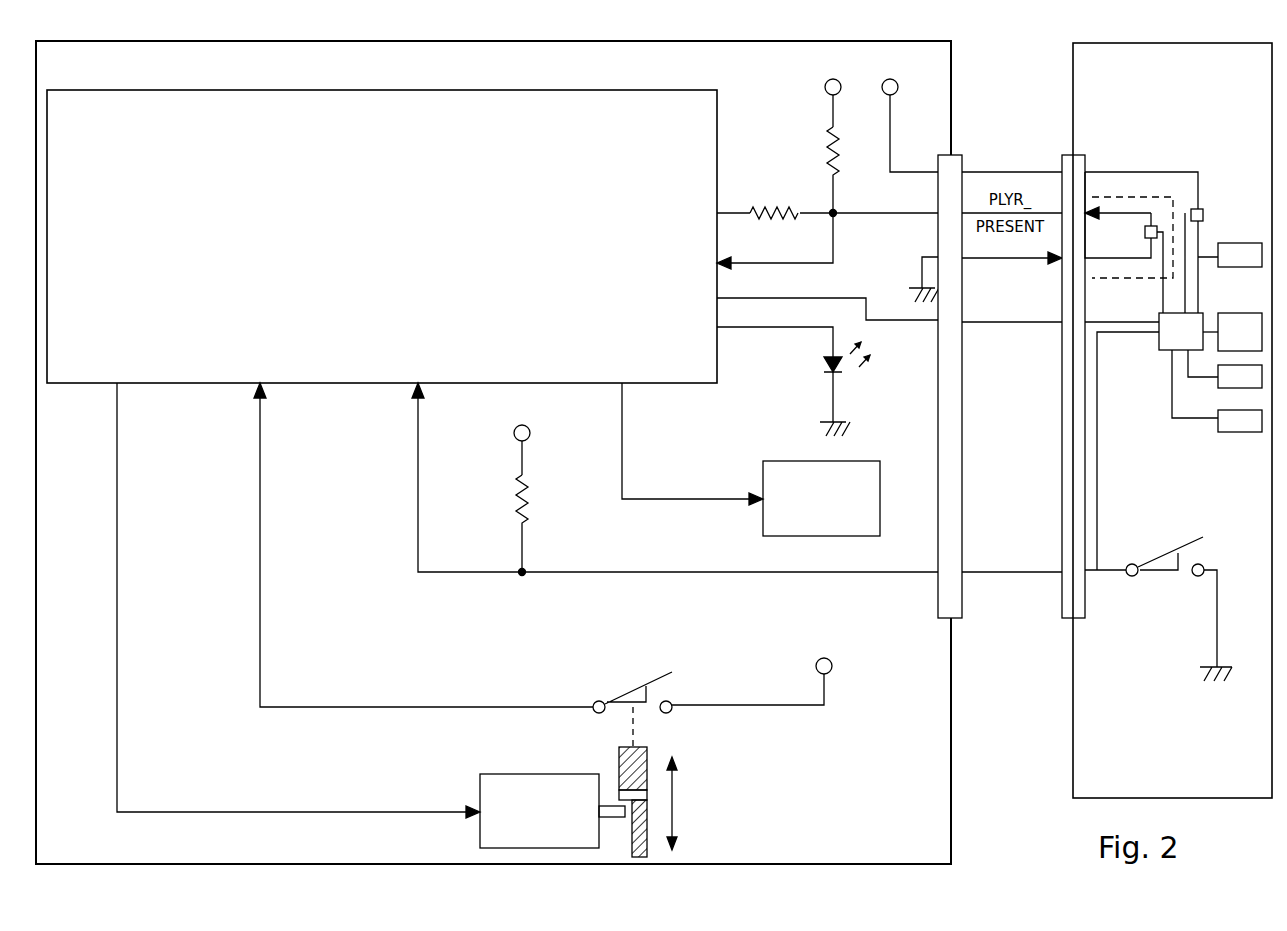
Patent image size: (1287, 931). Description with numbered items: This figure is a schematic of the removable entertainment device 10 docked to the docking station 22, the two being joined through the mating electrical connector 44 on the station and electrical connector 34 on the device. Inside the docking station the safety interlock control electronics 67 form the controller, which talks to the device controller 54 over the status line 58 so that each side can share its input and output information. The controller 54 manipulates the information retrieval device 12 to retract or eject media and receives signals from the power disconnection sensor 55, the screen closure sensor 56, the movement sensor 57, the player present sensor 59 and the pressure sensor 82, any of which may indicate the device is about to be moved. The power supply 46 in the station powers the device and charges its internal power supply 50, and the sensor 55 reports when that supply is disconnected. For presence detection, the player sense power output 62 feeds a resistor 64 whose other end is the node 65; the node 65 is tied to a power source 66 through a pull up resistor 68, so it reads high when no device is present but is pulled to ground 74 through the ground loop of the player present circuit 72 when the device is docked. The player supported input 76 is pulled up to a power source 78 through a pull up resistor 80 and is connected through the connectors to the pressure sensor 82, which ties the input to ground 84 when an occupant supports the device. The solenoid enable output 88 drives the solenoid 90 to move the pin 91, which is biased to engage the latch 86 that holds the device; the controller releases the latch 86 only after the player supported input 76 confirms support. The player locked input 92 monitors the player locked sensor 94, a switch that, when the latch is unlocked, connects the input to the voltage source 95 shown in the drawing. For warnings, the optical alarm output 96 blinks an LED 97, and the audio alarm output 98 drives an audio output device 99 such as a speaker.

The removable entertainment device 10 is at (1073, 78).
The information retrieval device 12 is at (1250, 313).
The docking station 22 is at (953, 68).
The electrical connector 34 is at (1067, 155).
The electrical connector 44 is at (957, 155).
The power supply 46 is at (892, 78).
The internal power supply 50 is at (1226, 267).
The controller 54 is at (1160, 350).
The power disconnection sensor 55 is at (1204, 216).
The screen closure sensor 56 is at (1218, 386).
The movement sensor 57 is at (1218, 430).
The status line 58 is at (720, 300).
The player present sensor 59 is at (1145, 234).
The player sense power output 62 is at (718, 218).
The resistor 64 is at (770, 207).
The node 65 is at (838, 210).
The power source 66 is at (836, 78).
The docking station safety interlock control electronics 67 is at (708, 90).
The pull up resistor 68 is at (827, 162).
The player present circuit 72 is at (722, 266).
The ground 74 is at (920, 272).
The player supported input 76 is at (414, 388).
The power source 78 is at (526, 425).
The pull up resistor 80 is at (516, 507).
The pressure sensor 82 is at (1165, 556).
The ground 84 is at (1216, 605).
The latch 86 is at (648, 752).
The solenoid enable output 88 is at (116, 385).
The solenoid 90 is at (483, 774).
The pin 91 is at (611, 805).
The player locked input 92 is at (256, 388).
The player locked sensor 94 is at (600, 700).
The pull-up terminal 95 is at (828, 658).
The optical alarm output 96 is at (720, 330).
The LED 97 is at (826, 364).
The audio alarm output 98 is at (624, 387).
The audio output device 99 is at (868, 461).